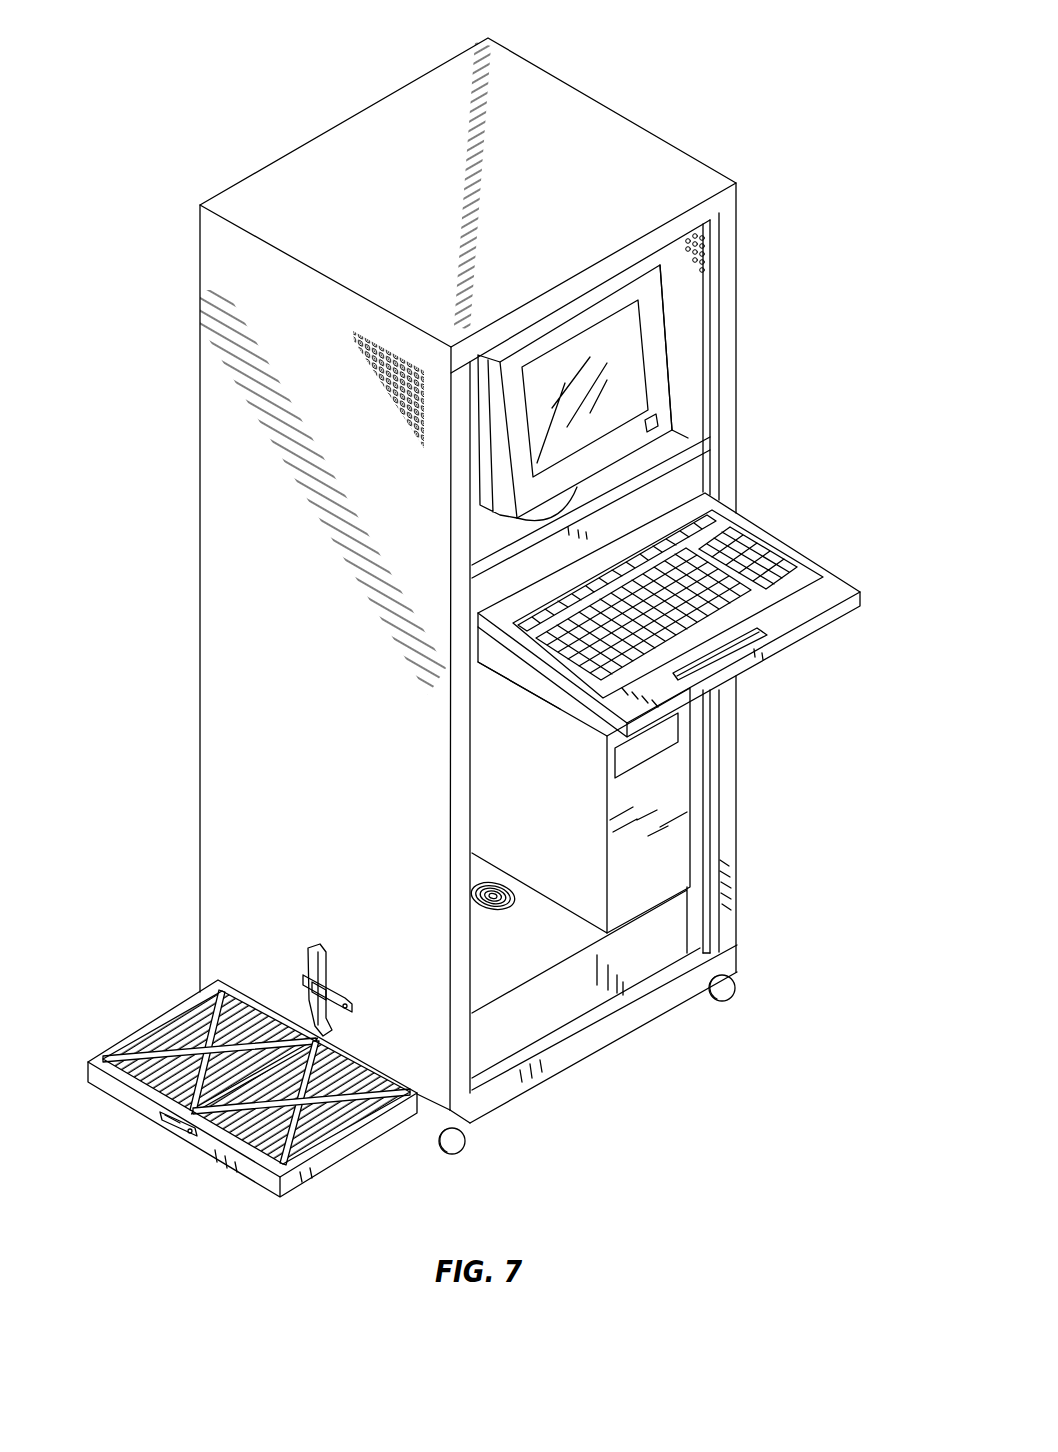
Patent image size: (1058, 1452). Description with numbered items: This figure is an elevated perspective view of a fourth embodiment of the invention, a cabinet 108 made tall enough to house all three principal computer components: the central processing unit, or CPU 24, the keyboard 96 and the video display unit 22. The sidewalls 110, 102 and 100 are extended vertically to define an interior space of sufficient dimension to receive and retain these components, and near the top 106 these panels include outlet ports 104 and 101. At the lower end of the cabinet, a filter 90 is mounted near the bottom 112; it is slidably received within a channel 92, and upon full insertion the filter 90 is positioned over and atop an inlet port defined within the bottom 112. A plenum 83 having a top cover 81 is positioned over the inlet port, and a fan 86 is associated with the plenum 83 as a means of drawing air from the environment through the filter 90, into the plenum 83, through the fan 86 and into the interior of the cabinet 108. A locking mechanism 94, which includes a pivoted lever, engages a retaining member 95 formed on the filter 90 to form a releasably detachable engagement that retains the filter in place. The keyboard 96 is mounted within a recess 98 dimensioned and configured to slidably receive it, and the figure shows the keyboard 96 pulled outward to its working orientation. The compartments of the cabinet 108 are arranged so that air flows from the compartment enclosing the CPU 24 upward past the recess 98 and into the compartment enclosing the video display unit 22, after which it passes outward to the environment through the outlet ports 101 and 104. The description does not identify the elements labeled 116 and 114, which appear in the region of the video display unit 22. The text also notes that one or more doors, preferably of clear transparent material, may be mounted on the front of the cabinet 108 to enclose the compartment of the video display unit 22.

The sidewall 110 is at (200, 238).
The top 106 is at (446, 216).
The sidewall 102 is at (331, 589).
The outlet ports 104 is at (380, 371).
The outlet ports 101 is at (703, 253).
The sidewall 100 is at (737, 401).
The cabinet 108 is at (737, 765).
The bottom 112 is at (605, 1047).
The video display unit 22 is at (658, 328).
The monitor mount 116 is at (688, 360).
The monitor shelf 114 is at (687, 437).
The recess 98 is at (480, 663).
The keyboard 96 is at (832, 583).
The CPU 24 is at (561, 797).
The fan 86 is at (505, 905).
The top cover 81 is at (545, 935).
The plenum 83 is at (582, 1004).
The filter 90 is at (350, 1160).
The channel 92 is at (363, 1060).
The retaining member 95 is at (172, 1122).
The locking mechanism 94 is at (320, 950).